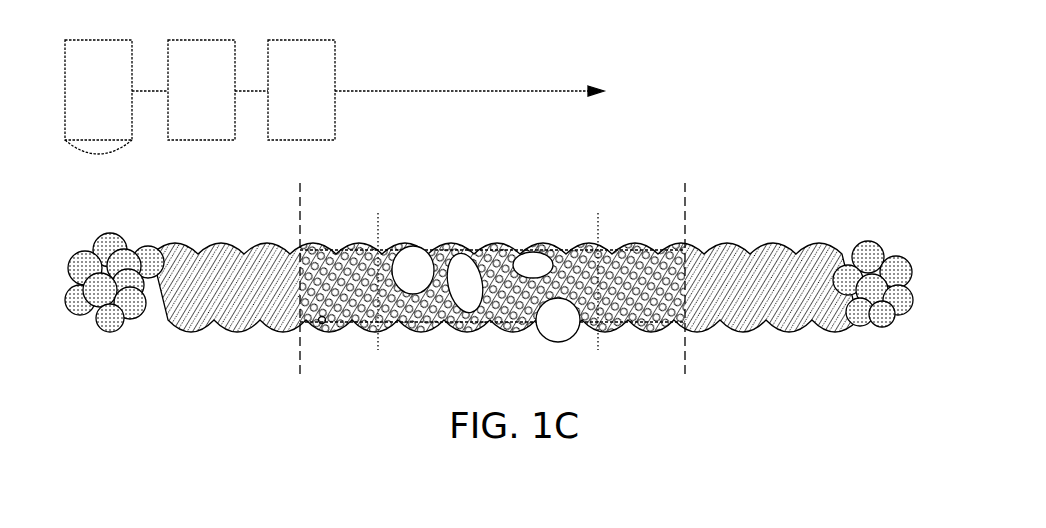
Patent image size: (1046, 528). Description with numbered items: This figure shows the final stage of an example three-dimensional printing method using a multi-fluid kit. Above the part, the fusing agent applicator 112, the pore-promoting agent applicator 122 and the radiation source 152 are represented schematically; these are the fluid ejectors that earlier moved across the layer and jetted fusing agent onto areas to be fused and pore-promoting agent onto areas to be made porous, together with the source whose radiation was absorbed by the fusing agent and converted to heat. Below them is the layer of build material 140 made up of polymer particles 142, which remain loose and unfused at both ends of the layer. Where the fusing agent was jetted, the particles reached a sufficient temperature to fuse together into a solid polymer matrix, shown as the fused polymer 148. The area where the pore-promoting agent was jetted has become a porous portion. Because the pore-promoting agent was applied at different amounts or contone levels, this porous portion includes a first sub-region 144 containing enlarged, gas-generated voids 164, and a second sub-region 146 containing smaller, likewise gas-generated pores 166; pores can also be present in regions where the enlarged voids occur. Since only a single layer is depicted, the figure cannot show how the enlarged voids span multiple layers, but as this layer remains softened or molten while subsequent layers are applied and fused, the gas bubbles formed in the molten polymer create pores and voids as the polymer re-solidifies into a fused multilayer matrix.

The radiation source 152 is at (80, 105).
The fusing agent applicator 112 is at (183, 105).
The pore-promoting agent applicator 122 is at (283, 105).
The layer of build material 140 is at (878, 228).
The polymer particles 142 is at (125, 265).
The first sub-region 144 is at (540, 228).
The second sub-region 146 is at (355, 233).
The fused polymer 148 is at (760, 253).
The voids 164 is at (468, 300).
The pores 166 is at (324, 323).